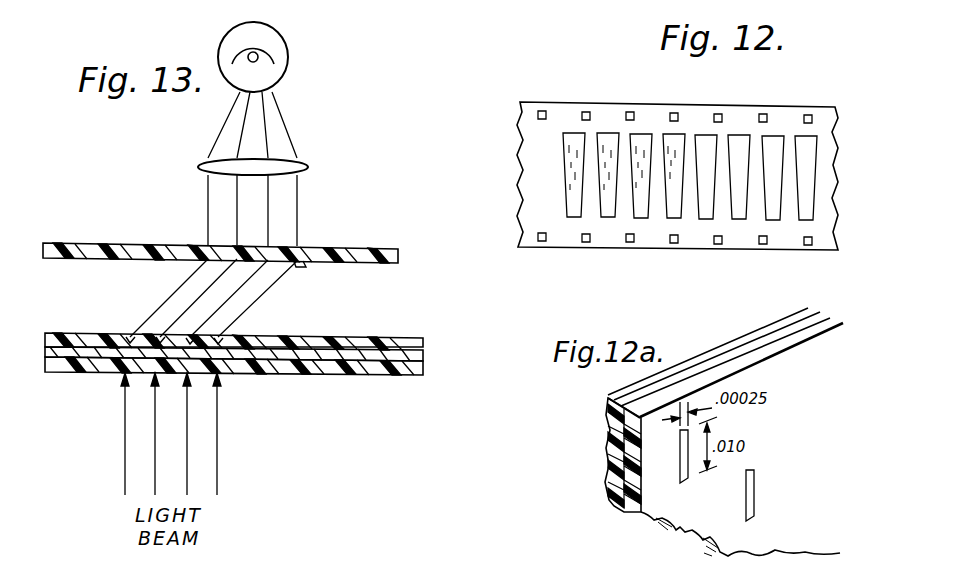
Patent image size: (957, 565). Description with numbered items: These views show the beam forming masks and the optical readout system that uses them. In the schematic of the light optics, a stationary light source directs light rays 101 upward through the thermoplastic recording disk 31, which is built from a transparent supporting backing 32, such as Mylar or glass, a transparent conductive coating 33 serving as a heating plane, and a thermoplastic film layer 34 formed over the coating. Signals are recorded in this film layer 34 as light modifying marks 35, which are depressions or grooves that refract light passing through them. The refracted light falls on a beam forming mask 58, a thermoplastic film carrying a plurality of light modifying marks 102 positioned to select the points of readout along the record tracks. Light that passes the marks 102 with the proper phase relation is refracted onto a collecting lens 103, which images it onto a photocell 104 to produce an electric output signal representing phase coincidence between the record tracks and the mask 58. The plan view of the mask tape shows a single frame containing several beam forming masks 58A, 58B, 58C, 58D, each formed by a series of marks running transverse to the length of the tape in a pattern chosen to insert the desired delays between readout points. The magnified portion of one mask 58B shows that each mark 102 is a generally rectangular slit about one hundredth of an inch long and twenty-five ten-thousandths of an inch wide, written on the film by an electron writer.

In FIG. 13, the photocell 104 is at (288, 57).
In FIG. 13, the collecting lens 103 is at (300, 167).
In FIG. 13, the light modifying marks 102 is at (300, 258).
In FIG. 12, the light modifying marks 102 is at (640, 185).
In FIG. 12A, the light modifying marks 102 is at (680, 478).
In FIG. 13, the beam forming mask 58 is at (368, 248).
In FIG. 12, the beam forming mask 58A is at (680, 128).
In FIG. 12, the beam forming mask 58B is at (650, 128).
In FIG. 12, the beam forming mask 58C is at (612, 126).
In FIG. 12, the beam forming mask 58D is at (572, 128).
In FIG. 13, the light modifying marks 35 is at (222, 337).
In FIG. 13, the thermoplastic film layer 34 is at (412, 340).
In FIG. 13, the transparent conductive coating 33 is at (425, 355).
In FIG. 13, the supporting backing 32 is at (428, 368).
In FIG. 13, the thermoplastic recording disk 31 is at (371, 358).
In FIG. 13, the light rays 101 is at (219, 420).